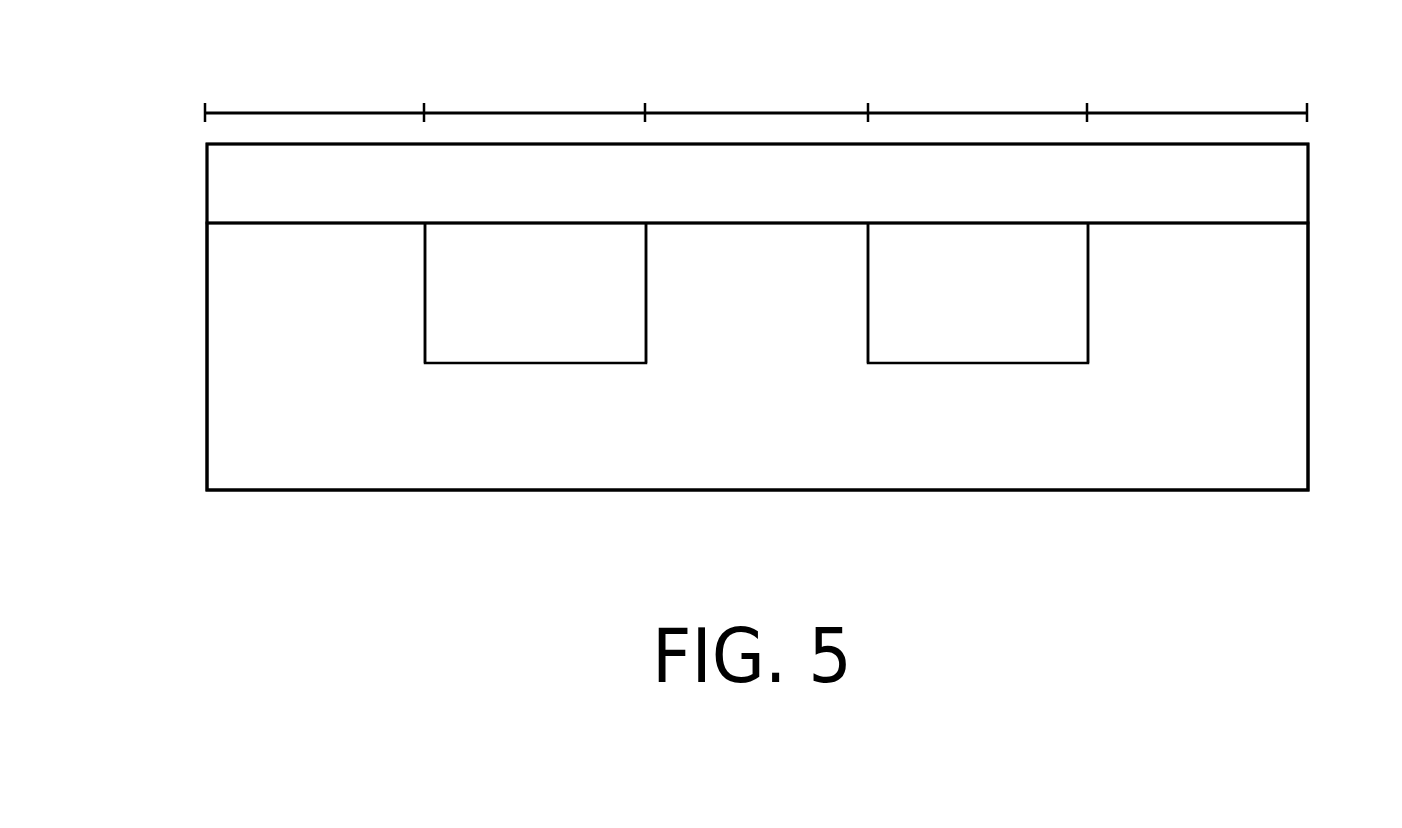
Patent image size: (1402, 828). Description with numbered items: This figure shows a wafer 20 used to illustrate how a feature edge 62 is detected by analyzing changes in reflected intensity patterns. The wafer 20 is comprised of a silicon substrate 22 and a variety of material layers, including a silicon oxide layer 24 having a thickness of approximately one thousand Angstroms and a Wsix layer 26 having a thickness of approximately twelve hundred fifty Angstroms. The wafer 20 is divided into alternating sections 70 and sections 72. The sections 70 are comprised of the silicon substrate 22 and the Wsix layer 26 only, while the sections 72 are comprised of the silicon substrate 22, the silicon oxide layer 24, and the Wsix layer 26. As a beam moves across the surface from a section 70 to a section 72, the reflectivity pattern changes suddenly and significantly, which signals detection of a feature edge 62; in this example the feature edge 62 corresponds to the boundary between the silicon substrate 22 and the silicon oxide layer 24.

The wafer 20 is at (157, 483).
The silicon substrate 22 is at (1281, 380).
The silicon oxide layer 24 is at (525, 348).
The Wsix layer 26 is at (1281, 193).
The feature edge 62 is at (425, 301).
The sections of the wafer 70 is at (756, 91).
The sections of the wafer 72 is at (755, 91).